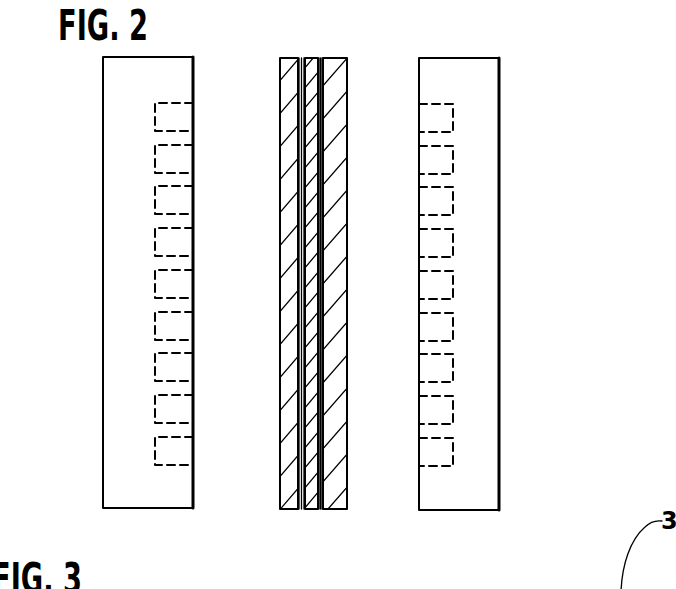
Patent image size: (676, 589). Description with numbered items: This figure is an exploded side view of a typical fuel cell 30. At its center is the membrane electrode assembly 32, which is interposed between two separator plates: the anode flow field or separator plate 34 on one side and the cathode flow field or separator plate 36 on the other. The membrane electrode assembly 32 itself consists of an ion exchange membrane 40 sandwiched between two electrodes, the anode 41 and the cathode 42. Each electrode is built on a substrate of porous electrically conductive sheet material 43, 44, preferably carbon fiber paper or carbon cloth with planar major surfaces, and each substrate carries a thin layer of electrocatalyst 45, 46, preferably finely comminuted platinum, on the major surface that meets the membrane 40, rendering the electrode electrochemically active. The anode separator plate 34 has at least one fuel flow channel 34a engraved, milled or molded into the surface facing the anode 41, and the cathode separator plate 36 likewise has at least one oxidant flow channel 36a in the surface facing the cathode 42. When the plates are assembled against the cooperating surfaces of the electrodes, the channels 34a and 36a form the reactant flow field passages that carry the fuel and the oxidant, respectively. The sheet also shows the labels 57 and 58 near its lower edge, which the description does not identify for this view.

In FIG. 2, the fuel cell 30 is at (123, 537).
In FIG. 2, the membrane electrode assembly 32 is at (303, 283).
In FIG. 2, the anode flow field or separator plate 34 is at (489, 193).
In FIG. 2, the fuel flow channel 34a is at (455, 281).
In FIG. 2, the cathode flow field or separator plate 36 is at (110, 197).
In FIG. 2, the oxidant flow channel 36a is at (156, 280).
In FIG. 2, the ion exchange membrane 40 is at (311, 57).
In FIG. 2, the anode 41 is at (337, 58).
In FIG. 2, the cathode 42 is at (280, 78).
In FIG. 2, the porous electrically conductive sheet material 43 is at (337, 413).
In FIG. 2, the porous electrically conductive sheet material 44 is at (287, 430).
In FIG. 2, the electrocatalyst layer 45 is at (358, 283).
In FIG. 2, the electrocatalyst layer 46 is at (297, 488).
In FIG. 3, the element of FIG. 3 57 is at (573, 588).
In FIG. 3, the element of FIG. 3 58 is at (443, 579).